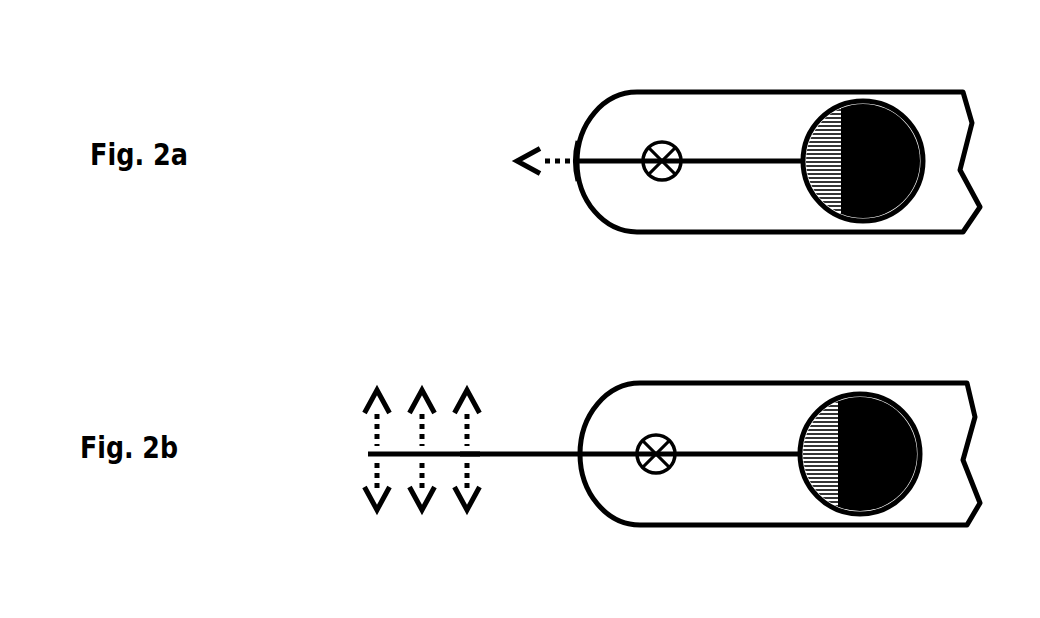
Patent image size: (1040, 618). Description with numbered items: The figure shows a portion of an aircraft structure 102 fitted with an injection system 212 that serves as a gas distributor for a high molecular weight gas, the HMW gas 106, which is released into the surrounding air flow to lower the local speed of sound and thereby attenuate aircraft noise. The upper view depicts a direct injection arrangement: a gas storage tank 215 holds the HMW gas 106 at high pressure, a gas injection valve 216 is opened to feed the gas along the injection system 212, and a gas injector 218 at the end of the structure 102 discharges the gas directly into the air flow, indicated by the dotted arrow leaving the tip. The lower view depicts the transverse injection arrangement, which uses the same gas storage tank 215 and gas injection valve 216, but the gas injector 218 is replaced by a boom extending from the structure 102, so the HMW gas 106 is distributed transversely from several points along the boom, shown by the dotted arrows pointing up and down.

In FIG. 2a, the structure 102 is at (718, 90).
In FIG. 2b, the structure 102 is at (808, 528).
In FIG. 2a, the HMW gas 106 is at (533, 146).
In FIG. 2b, the HMW gas 106 is at (467, 388).
In FIG. 2a, the injection system 212 is at (733, 165).
In FIG. 2b, the injection system 212 is at (723, 450).
In FIG. 2a, the gas storage tank 215 is at (927, 192).
In FIG. 2b, the gas storage tank 215 is at (923, 415).
In FIG. 2a, the gas injection valve 216 is at (666, 184).
In FIG. 2b, the gas injection valve 216 is at (658, 424).
In FIG. 2a, the gas injector 218 is at (575, 168).
In FIG. 2b, the gas injector 218 is at (470, 452).